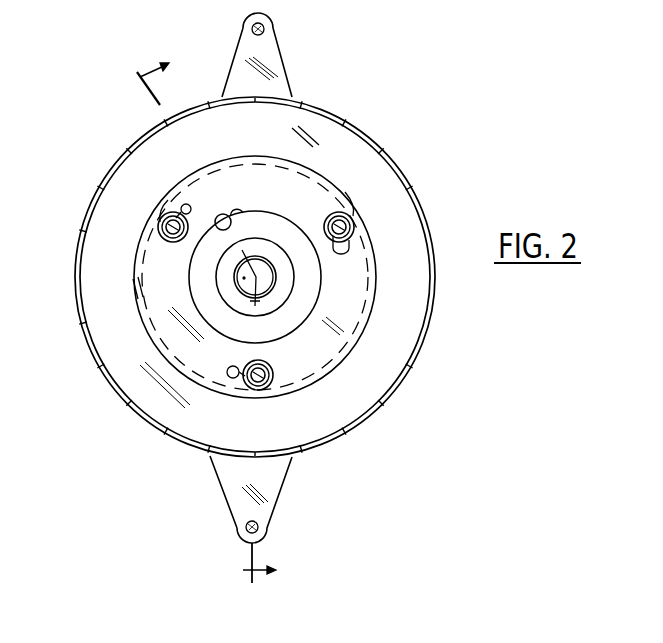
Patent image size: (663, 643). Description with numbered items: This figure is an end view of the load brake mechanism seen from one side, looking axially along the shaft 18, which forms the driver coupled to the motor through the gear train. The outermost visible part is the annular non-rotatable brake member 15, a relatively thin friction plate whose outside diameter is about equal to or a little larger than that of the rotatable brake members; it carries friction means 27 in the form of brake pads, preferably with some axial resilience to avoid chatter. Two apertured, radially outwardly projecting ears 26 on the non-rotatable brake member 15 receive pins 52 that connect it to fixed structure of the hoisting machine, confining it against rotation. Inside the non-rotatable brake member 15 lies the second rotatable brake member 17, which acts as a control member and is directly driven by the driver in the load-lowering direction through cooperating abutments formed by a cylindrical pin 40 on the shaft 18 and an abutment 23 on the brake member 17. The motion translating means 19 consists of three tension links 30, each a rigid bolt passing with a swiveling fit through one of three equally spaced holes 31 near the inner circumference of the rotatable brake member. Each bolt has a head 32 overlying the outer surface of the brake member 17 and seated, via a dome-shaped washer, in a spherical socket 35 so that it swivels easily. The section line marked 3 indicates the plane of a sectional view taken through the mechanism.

The non-rotatable brake member 15 is at (343, 433).
The second rotatable brake member 17 is at (350, 418).
The shaft 18 is at (313, 290).
The motion translating means 19 is at (157, 222).
The abutment 23 is at (238, 211).
The ears 26 is at (283, 55).
The friction means 27 is at (387, 154).
The tension link 30 is at (325, 221).
The holes 31 is at (187, 205).
The head 32 is at (170, 236).
The spherical socket 35 is at (338, 212).
The pin 40 is at (223, 214).
The pins 52 is at (251, 29).
The section line 3- 3 is at (209, 318).